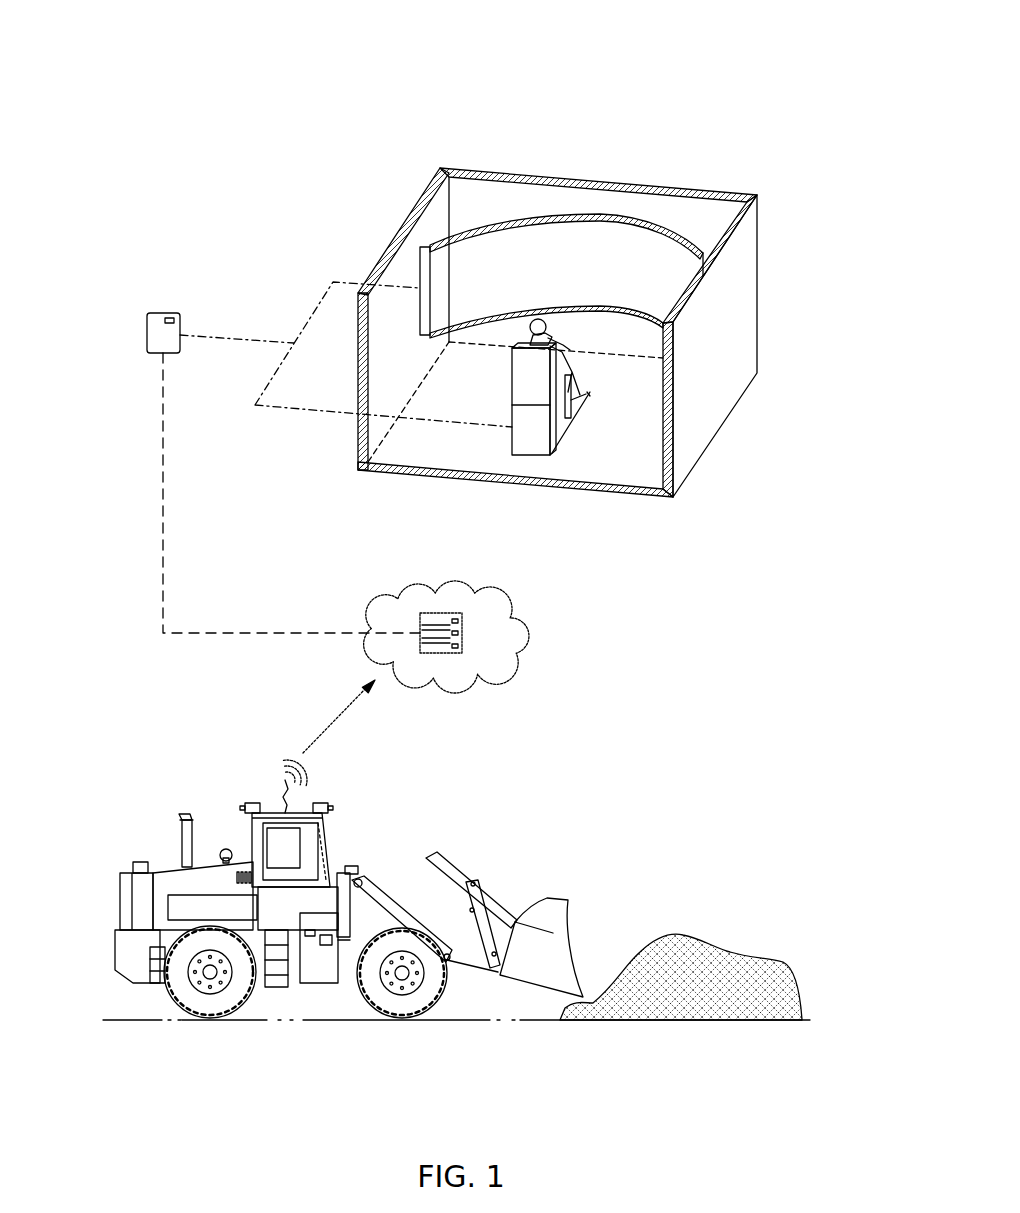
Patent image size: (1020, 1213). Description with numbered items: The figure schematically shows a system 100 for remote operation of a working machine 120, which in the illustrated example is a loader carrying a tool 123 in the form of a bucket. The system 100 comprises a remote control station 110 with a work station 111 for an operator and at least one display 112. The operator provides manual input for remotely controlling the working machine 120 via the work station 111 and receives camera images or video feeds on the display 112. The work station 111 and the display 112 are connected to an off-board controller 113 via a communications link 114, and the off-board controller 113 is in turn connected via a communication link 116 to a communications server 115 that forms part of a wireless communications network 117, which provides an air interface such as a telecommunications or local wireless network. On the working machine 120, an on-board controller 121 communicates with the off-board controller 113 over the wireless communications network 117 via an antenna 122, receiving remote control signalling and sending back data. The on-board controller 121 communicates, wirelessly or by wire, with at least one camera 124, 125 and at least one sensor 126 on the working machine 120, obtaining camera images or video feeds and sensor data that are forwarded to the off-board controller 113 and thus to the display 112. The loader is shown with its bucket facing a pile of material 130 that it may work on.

The system 100 is at (212, 120).
The remote control station 110 is at (650, 143).
The work station 111 is at (553, 450).
The display 112 is at (470, 230).
The off-board controller 113 is at (162, 312).
The communications link 114 is at (340, 413).
The communications server 115 is at (438, 613).
The communication link 116 is at (163, 467).
The wireless communications network 117 is at (527, 648).
The working machine 120 is at (117, 738).
The on-board controller 121 is at (135, 860).
The antenna 122 is at (278, 778).
The tool 123 is at (560, 898).
The camera 124 is at (327, 800).
The camera 125 is at (250, 800).
The sensor 126 is at (355, 868).
The material pile 130 is at (705, 937).